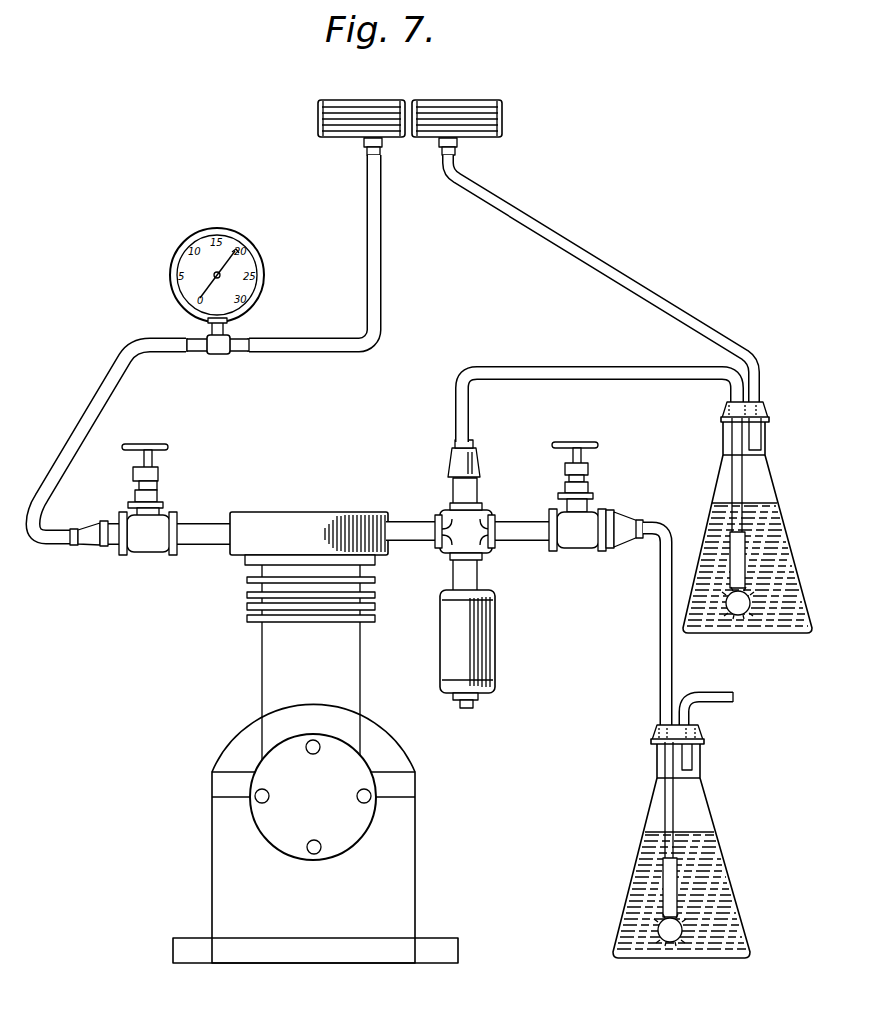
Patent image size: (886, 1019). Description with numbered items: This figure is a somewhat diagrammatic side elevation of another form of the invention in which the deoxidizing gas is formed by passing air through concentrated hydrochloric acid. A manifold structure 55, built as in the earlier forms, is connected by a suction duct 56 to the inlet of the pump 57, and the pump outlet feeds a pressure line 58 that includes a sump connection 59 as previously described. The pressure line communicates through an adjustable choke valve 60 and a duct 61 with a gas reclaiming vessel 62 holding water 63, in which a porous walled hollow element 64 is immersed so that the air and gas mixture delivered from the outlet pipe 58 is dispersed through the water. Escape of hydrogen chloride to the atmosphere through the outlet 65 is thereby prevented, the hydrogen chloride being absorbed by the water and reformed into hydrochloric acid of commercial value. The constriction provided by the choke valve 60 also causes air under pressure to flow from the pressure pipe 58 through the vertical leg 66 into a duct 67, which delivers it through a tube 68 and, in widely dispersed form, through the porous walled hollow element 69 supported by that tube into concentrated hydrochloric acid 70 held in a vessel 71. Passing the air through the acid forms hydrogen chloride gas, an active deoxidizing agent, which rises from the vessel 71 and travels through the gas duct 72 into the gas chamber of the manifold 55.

The manifold structure 55 is at (482, 89).
The suction duct 56 is at (367, 203).
The pump 57 is at (315, 737).
The pressure line 58 is at (410, 522).
The sump connection 59 is at (495, 652).
The choke valve 60 is at (578, 536).
The duct 61 is at (660, 617).
The gas reclaiming vessel 62 is at (703, 822).
The water 63 is at (700, 875).
The porous walled hollow element 64 is at (682, 938).
The outlet 65 is at (714, 703).
The vertical leg 66 is at (455, 455).
The duct 67 is at (575, 354).
The tube 68 is at (733, 473).
The porous walled hollow element 69 is at (744, 615).
The concentrated hydrochloric acid 70 is at (712, 514).
The vessel 71 is at (727, 458).
The gas duct 72 is at (622, 282).